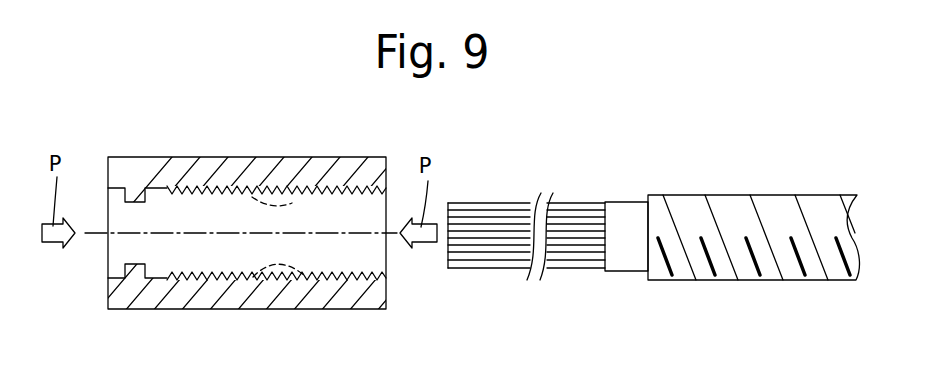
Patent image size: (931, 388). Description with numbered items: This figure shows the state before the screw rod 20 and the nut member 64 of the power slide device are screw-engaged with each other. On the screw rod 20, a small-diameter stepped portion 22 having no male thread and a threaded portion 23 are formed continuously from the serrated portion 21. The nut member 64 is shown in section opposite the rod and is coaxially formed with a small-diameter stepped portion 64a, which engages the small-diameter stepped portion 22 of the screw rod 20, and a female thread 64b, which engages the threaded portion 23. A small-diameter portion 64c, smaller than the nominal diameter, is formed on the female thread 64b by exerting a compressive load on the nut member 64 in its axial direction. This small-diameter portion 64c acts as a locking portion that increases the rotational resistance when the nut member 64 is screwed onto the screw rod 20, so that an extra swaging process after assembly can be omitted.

The nut member 64 is at (291, 233).
The small-diameter stepped portion 64a is at (134, 197).
The female thread 64b is at (339, 277).
The small-diameter portion 64c is at (289, 205).
The screw rod 20 is at (653, 223).
The serrated portion 21 is at (492, 250).
The small-diameter stepped portion 22 is at (625, 250).
The threaded portion 23 is at (818, 281).